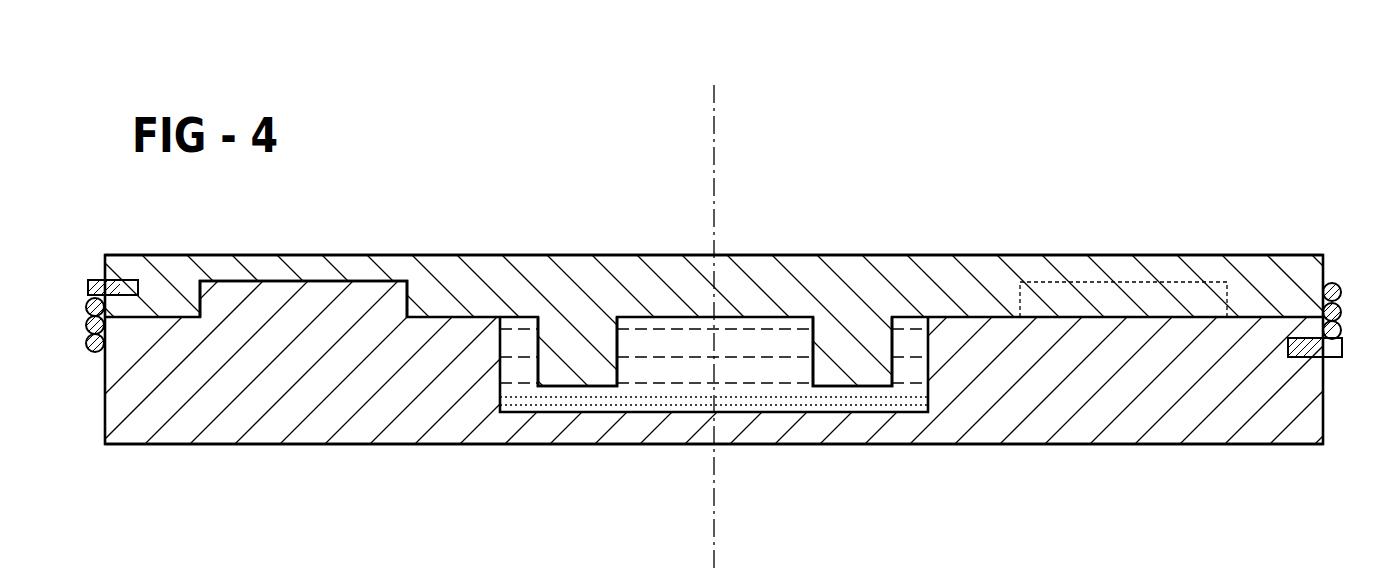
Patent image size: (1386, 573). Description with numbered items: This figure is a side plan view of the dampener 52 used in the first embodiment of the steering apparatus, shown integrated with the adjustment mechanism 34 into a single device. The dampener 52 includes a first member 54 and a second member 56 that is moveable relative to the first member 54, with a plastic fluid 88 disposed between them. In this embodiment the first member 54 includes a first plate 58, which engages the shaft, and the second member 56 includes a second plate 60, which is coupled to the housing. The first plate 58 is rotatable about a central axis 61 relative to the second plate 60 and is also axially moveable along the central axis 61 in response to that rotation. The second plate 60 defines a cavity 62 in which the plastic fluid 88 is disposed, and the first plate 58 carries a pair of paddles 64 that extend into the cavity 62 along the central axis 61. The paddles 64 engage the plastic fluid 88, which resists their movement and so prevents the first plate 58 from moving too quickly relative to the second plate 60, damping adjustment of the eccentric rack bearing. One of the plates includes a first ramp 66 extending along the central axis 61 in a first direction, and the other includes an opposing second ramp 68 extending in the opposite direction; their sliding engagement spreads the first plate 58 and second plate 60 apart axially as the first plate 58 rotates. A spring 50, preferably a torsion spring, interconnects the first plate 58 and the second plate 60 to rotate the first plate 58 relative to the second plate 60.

The adjustment mechanism 34 is at (1165, 94).
The spring 50 is at (88, 281).
The dampener 52 is at (764, 369).
The first member 54 is at (438, 254).
The second member 56 is at (297, 402).
The first plate 58 is at (881, 254).
The second plate 60 is at (1142, 445).
The central axis 61 is at (714, 147).
The cavity 62 is at (502, 372).
The paddle 64 is at (575, 348).
The first ramp 66 is at (1158, 282).
The second ramp 68 is at (228, 293).
The plastic fluid 88 is at (671, 372).